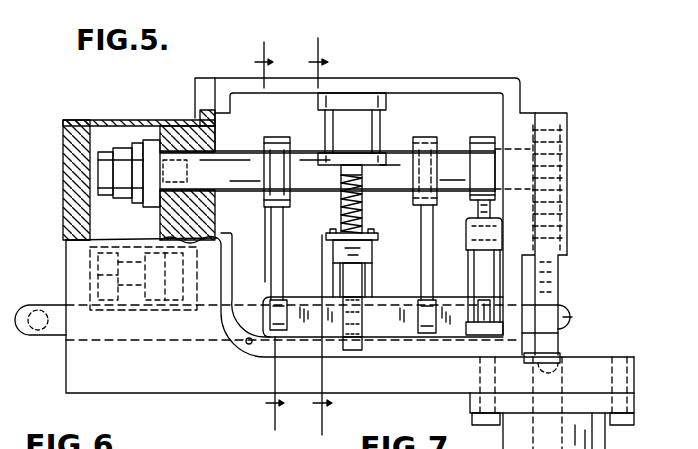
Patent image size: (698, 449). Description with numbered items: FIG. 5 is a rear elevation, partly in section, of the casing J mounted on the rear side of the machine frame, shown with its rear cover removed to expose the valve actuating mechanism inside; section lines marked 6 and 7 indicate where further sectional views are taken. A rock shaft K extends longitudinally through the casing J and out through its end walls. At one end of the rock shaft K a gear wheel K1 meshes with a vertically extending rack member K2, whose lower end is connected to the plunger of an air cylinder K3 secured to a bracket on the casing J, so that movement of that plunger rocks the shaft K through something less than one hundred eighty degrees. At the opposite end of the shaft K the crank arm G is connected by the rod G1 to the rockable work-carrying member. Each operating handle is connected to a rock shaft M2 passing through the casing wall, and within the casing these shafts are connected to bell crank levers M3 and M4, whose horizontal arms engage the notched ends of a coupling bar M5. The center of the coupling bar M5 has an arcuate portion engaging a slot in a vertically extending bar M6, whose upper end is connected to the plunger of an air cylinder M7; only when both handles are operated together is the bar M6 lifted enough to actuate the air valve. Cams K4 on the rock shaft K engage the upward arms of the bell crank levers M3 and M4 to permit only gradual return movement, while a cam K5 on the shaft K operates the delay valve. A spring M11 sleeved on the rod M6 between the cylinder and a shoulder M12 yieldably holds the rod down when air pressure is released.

The rod G1 is at (108, 152).
The crank arm G is at (142, 145).
The casing J is at (468, 78).
The rock shaft K is at (453, 150).
The gear wheel K1 is at (568, 138).
The rack member K2 is at (550, 278).
The air cylinder K3 is at (594, 440).
The cams K4 is at (297, 118).
The cam K5 is at (490, 140).
The rock shaft M2 is at (324, 313).
The bell crank lever M3 is at (285, 260).
The bell crank lever M4 is at (428, 247).
The coupling bar M5 is at (385, 320).
The vertically extending bar M6 is at (350, 288).
The air cylinder M7 is at (350, 140).
The spring M11 is at (362, 224).
The shoulder M12 is at (358, 257).
The section line 6 is at (269, 236).
The section line 7 is at (320, 238).